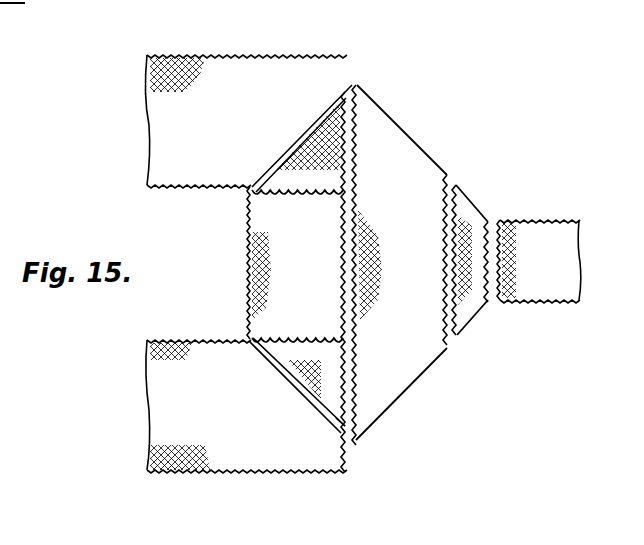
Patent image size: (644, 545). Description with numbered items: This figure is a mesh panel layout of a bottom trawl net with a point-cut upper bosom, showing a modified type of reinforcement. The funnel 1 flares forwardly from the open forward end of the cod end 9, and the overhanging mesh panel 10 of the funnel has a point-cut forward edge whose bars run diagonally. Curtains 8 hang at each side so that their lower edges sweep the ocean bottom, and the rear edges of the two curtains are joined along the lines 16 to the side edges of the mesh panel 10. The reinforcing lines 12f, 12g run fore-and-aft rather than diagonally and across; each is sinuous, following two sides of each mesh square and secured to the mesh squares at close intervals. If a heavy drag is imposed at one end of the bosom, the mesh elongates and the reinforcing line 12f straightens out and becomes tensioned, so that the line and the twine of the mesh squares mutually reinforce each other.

The funnel 1 is at (414, 119).
The curtain 8 is at (248, 426).
The cod end 9 is at (550, 313).
The overhanging mesh panel 10 is at (262, 212).
The reinforcing line 12g is at (283, 178).
The reinforcing line 12f is at (262, 331).
The joining line 16 is at (340, 421).